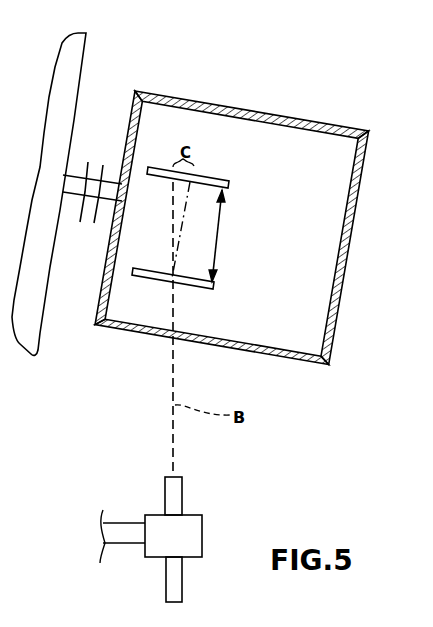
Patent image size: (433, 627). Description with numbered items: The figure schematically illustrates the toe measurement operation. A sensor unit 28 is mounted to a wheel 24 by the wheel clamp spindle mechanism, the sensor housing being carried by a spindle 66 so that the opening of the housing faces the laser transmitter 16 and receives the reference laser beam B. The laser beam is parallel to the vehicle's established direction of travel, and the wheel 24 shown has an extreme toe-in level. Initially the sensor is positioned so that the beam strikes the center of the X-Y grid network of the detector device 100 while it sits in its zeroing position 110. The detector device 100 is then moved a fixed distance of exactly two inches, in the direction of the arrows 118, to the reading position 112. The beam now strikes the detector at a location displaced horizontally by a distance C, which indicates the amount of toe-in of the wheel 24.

The wheel 24 is at (72, 62).
The sensor unit 28 is at (217, 222).
The spindle 66 is at (78, 209).
The detector device 100 is at (215, 229).
The reading position 112 is at (233, 186).
The zeroing position 110 is at (218, 288).
The arrows 118 is at (216, 233).
The laser transmitter 16 is at (177, 497).